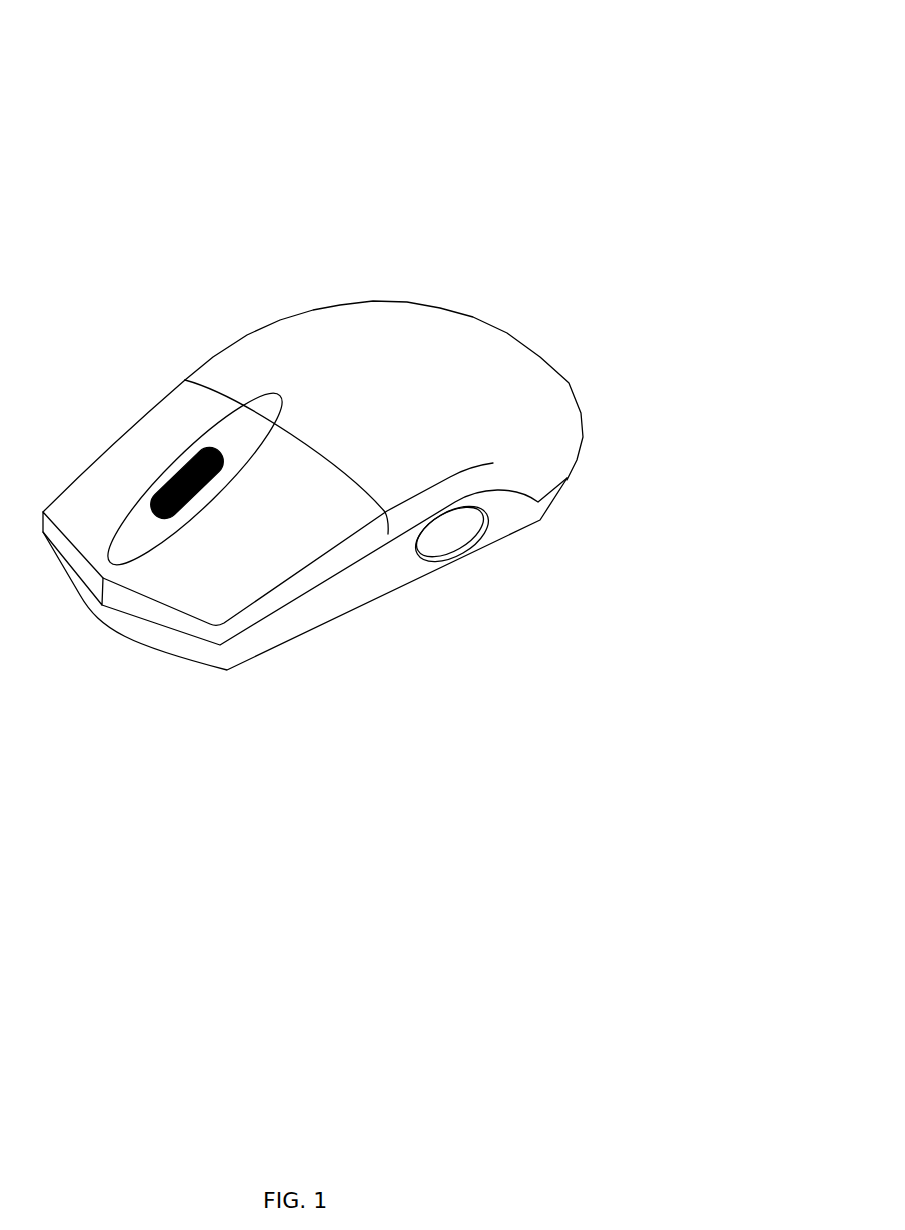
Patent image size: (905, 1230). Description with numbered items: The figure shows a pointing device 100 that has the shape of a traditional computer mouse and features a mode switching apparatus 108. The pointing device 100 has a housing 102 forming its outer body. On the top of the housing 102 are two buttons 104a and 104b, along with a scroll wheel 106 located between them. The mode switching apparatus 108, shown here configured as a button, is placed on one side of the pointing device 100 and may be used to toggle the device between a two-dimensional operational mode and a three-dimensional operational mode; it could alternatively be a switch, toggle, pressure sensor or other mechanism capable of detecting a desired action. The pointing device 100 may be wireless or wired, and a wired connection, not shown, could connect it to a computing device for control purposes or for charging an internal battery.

The pointing device 100 is at (499, 58).
The housing 102 is at (478, 305).
The button 104a is at (82, 458).
The button 104b is at (250, 619).
The scroll wheel 106 is at (205, 440).
The mode switching apparatus 108 is at (496, 533).